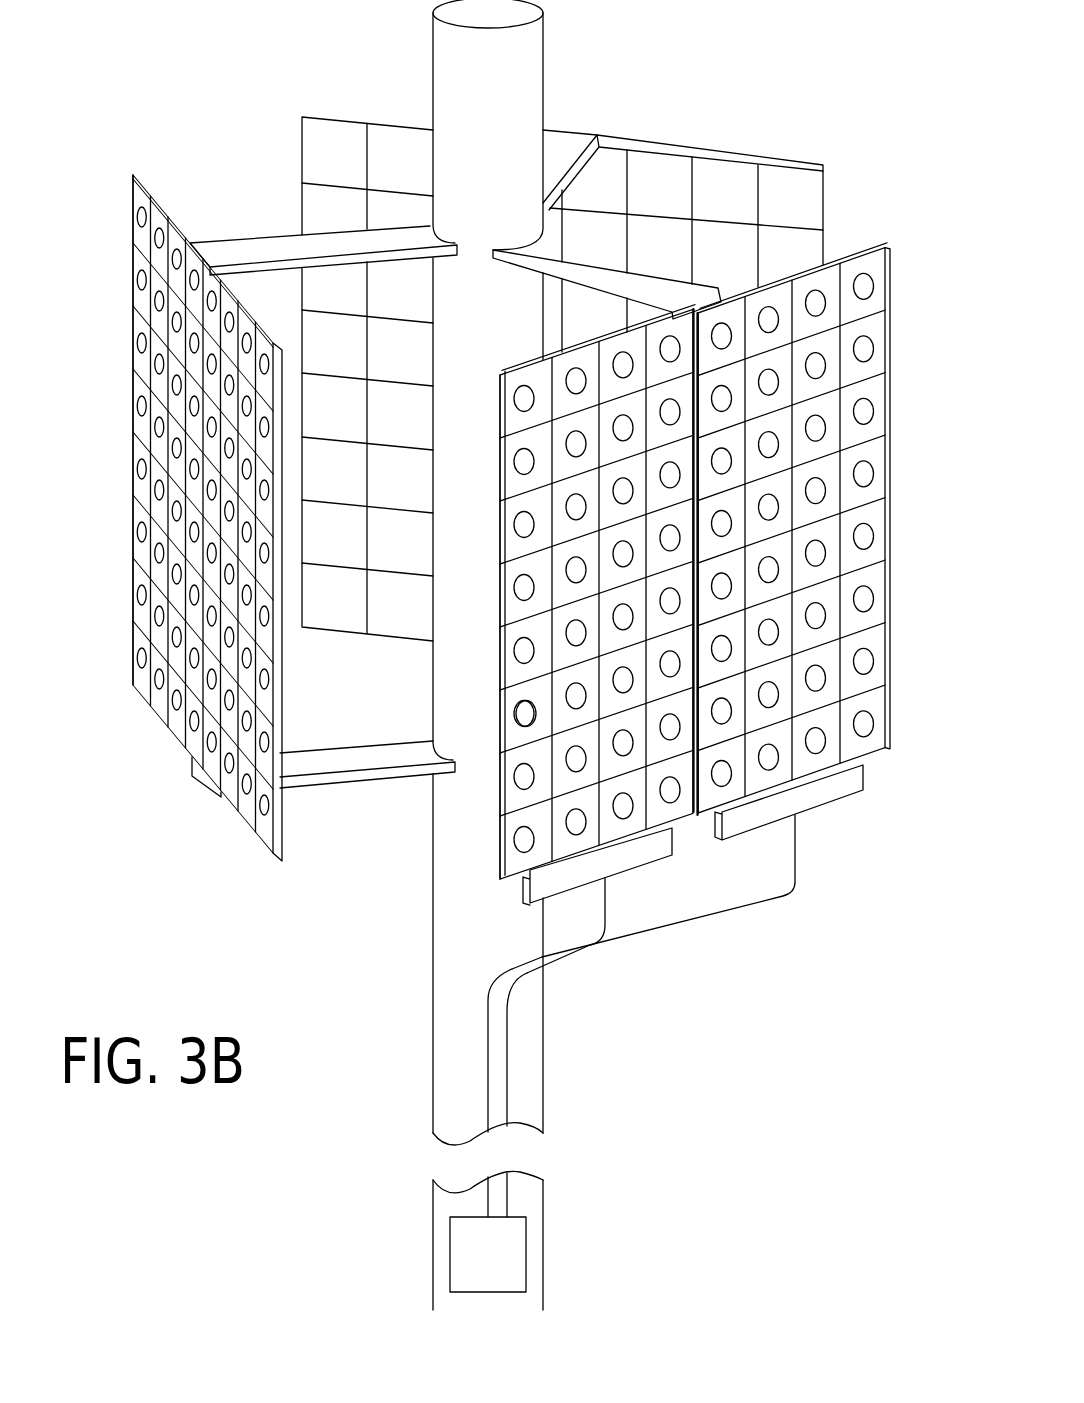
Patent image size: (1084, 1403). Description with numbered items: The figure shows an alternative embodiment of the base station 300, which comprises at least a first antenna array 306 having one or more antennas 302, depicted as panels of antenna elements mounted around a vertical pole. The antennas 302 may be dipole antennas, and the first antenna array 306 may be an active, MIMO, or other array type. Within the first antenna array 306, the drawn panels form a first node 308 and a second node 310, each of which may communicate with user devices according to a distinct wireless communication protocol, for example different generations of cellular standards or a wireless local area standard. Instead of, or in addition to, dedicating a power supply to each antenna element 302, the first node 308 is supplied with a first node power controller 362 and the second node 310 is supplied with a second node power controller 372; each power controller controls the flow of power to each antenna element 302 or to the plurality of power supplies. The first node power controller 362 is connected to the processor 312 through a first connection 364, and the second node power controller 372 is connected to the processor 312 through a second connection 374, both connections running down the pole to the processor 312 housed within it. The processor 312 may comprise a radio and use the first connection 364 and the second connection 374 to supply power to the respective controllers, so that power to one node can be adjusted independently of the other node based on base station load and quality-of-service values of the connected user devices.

The base station 300 is at (803, 85).
The antenna 302 is at (516, 724).
The first antenna array 306 is at (694, 729).
The first node 308 is at (667, 965).
The second node 310 is at (842, 862).
The processor 312 is at (450, 1263).
The first node power controller 362 is at (648, 862).
The first connection 364 is at (492, 990).
The second node power controller 372 is at (845, 794).
The second connection 374 is at (730, 918).